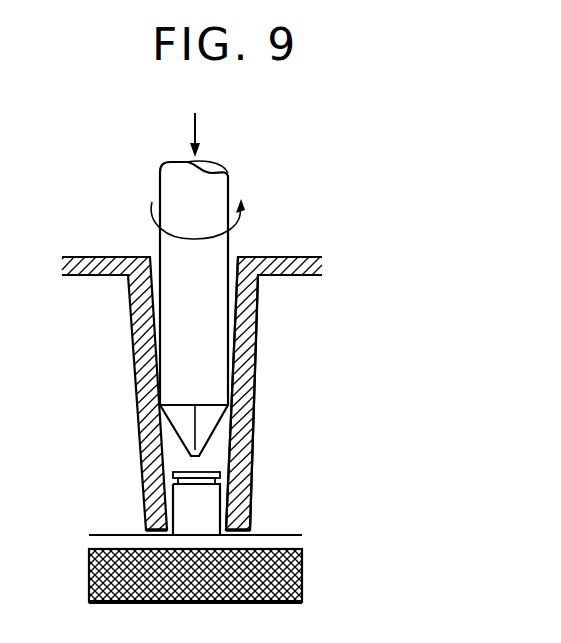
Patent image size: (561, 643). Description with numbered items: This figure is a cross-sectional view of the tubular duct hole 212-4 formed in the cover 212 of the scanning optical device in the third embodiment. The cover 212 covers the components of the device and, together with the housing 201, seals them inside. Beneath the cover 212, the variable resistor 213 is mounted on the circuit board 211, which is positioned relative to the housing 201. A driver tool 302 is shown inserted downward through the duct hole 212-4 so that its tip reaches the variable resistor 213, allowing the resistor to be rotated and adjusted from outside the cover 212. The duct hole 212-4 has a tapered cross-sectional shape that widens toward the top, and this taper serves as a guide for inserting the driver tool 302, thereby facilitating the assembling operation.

The driver tool 302 is at (222, 185).
The cover 212 is at (240, 370).
The duct hole 212-4 is at (255, 353).
The variable resistor 213 is at (213, 499).
The circuit board 211 is at (287, 543).
The housing 201 is at (300, 578).